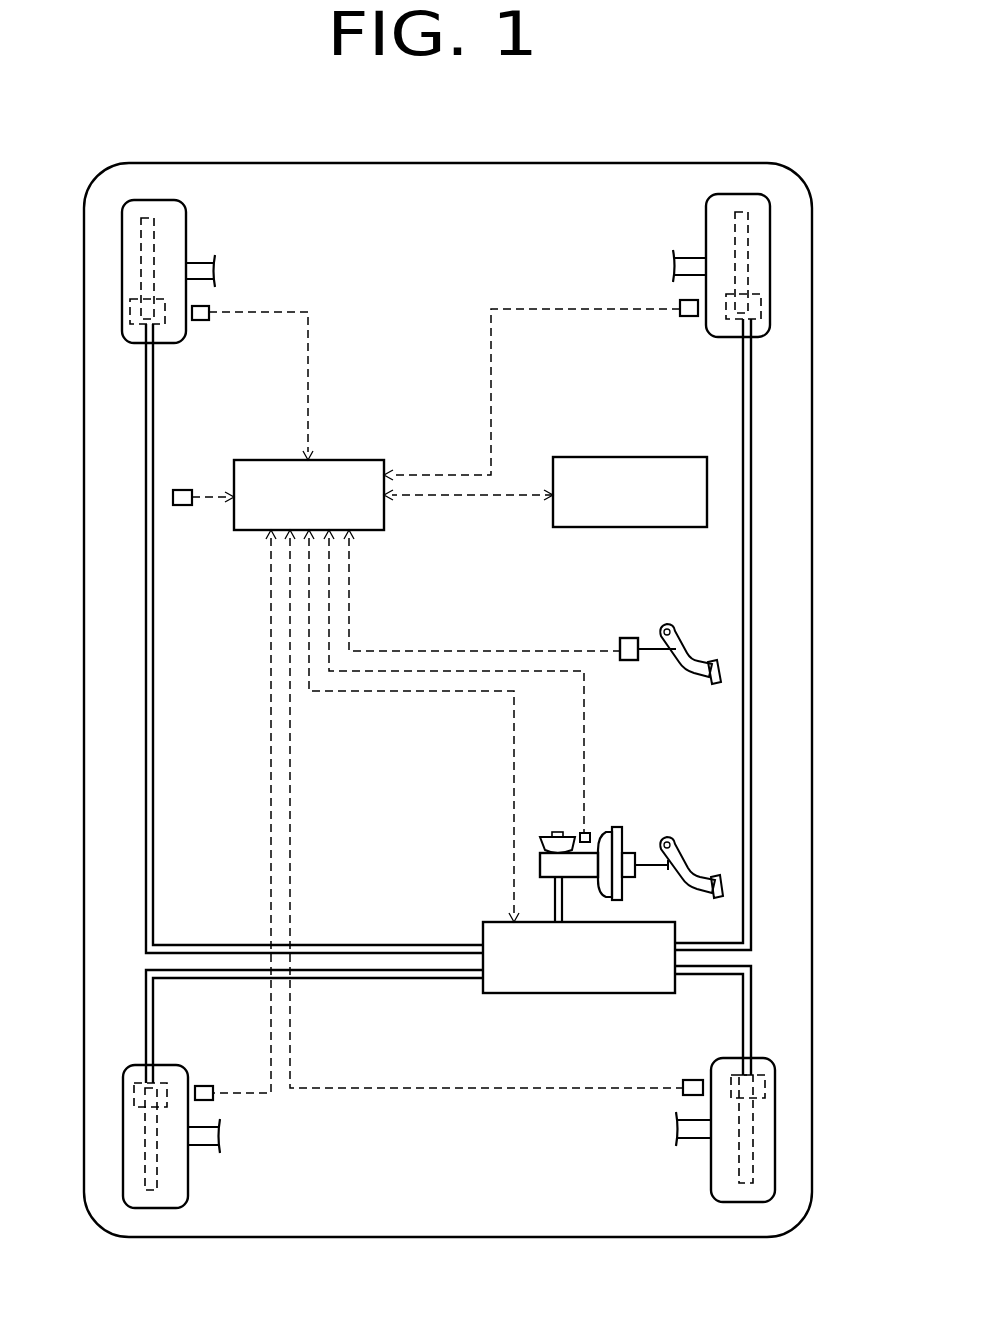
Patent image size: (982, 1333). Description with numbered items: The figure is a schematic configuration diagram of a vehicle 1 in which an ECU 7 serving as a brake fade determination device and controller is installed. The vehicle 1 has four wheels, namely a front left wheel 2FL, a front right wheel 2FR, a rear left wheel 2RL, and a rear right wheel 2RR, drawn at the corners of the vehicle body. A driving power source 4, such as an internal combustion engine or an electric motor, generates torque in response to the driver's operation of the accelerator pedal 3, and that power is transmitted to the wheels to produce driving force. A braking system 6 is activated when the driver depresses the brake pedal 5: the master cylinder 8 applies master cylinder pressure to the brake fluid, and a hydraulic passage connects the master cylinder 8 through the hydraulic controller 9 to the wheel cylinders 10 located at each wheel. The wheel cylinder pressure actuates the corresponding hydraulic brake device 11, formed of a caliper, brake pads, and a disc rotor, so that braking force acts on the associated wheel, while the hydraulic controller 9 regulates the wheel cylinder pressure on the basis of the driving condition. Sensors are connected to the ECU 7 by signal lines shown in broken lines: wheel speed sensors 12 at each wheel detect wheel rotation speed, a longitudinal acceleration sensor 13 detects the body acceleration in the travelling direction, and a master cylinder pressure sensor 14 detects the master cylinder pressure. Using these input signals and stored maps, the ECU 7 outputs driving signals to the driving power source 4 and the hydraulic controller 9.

The vehicle 1 is at (604, 152).
The front left wheel 2FL is at (187, 238).
The front right wheel 2FR is at (704, 232).
The rear left wheel 2RL is at (190, 1170).
The rear right wheel 2RR is at (708, 1164).
The accelerator pedal 3 is at (683, 625).
The driving power source 4 is at (665, 456).
The brake pedal 5 is at (680, 840).
The braking system 6 is at (757, 760).
The ECU 7 is at (349, 459).
The master cylinder 8 is at (582, 878).
The hydraulic controller 9 is at (630, 994).
The wheel cylinder 10 is at (142, 326).
The hydraulic brake device 11 is at (198, 206).
The wheel speed sensor 12 is at (200, 321).
The longitudinal acceleration sensor 13 is at (183, 489).
The master cylinder pressure sensor 14 is at (588, 831).